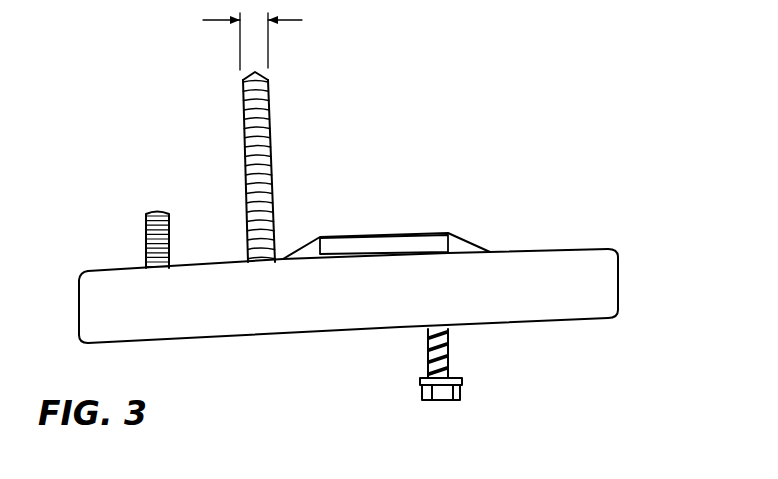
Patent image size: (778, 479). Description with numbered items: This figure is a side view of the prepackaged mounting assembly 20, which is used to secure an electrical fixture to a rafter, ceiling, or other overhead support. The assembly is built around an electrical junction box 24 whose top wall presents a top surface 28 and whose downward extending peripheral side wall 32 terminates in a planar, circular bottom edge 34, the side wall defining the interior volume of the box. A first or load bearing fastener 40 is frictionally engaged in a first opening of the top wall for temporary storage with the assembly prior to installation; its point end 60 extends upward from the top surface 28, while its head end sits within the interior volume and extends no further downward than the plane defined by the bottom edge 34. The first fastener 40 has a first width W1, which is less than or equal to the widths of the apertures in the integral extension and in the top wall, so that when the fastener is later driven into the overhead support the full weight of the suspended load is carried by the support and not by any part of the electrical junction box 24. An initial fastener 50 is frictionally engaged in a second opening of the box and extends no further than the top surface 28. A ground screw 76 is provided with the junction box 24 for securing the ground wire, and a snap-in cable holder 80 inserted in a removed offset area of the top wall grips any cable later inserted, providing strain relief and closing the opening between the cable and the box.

The prepackaged mounting assembly 20 is at (525, 128).
The electrical junction box 24 is at (387, 279).
The top surface 28 is at (569, 246).
The peripheral side wall 32 is at (378, 305).
The bottom edge 34 is at (569, 326).
The first fastener 40 is at (272, 157).
The initial fastener 50 is at (420, 382).
The point end 60 is at (250, 73).
The ground screw 76 is at (143, 215).
The snap-in cable holder 80 is at (373, 242).
The first width W1 is at (236, 40).